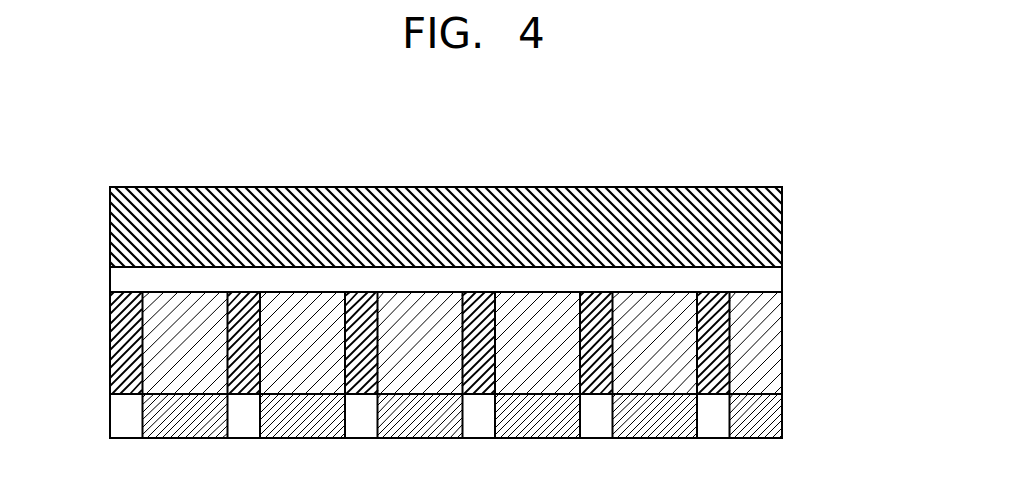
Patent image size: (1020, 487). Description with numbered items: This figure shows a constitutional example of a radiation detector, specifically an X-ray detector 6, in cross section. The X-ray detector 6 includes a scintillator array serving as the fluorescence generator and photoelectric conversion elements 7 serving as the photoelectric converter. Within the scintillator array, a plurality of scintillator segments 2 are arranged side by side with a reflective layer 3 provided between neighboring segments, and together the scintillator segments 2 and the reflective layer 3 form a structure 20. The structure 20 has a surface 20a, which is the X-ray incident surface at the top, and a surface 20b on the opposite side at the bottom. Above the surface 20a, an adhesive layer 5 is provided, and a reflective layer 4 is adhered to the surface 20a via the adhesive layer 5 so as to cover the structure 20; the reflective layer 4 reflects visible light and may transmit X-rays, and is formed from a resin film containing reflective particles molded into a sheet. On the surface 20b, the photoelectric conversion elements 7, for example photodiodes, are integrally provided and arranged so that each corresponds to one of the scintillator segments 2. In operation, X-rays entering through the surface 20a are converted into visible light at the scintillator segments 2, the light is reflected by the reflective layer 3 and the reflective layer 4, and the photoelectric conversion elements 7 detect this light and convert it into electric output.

The X-ray detector 6 is at (116, 166).
The reflective layer 4 is at (781, 228).
The adhesive layer 5 is at (772, 277).
The structure 20 is at (836, 316).
The surface 20a is at (147, 292).
The surface 20b is at (163, 395).
The scintillator segment 2 is at (774, 330).
The reflective layer 3 is at (713, 381).
The photoelectric conversion element 7 is at (753, 420).